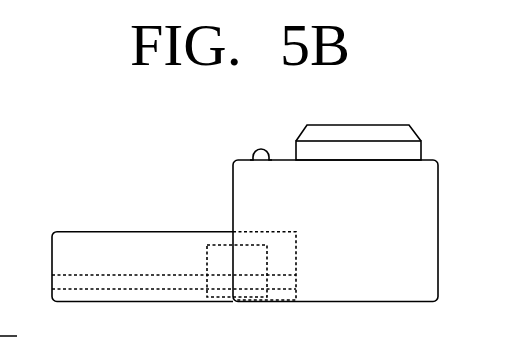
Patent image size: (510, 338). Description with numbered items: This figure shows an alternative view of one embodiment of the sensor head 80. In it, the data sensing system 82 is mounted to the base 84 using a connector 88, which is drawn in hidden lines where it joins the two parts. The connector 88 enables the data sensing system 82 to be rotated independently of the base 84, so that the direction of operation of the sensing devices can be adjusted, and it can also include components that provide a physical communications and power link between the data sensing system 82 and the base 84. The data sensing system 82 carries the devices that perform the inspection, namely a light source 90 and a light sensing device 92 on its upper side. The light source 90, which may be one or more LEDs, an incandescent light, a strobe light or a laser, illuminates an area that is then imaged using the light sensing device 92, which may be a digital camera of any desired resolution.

The sensor head 80 is at (94, 166).
The data sensing system 82 is at (385, 250).
The base 84 is at (135, 264).
The connector 88 is at (219, 247).
The light source 90 is at (258, 150).
The light sensing device 92 is at (368, 134).